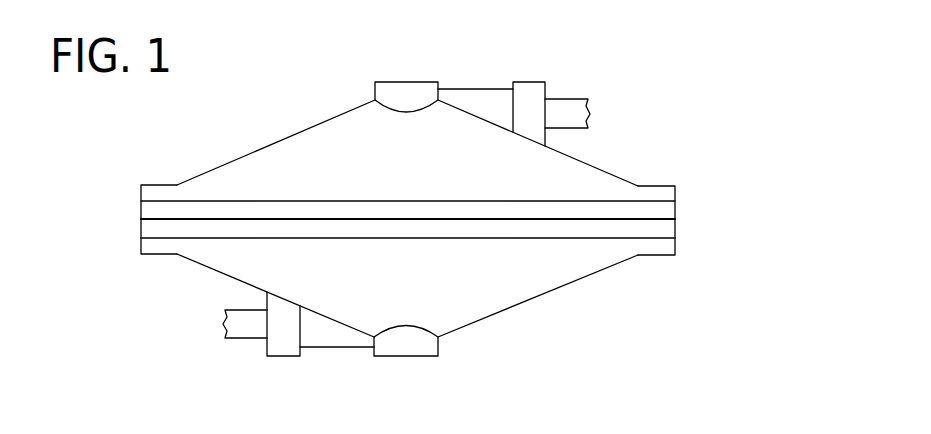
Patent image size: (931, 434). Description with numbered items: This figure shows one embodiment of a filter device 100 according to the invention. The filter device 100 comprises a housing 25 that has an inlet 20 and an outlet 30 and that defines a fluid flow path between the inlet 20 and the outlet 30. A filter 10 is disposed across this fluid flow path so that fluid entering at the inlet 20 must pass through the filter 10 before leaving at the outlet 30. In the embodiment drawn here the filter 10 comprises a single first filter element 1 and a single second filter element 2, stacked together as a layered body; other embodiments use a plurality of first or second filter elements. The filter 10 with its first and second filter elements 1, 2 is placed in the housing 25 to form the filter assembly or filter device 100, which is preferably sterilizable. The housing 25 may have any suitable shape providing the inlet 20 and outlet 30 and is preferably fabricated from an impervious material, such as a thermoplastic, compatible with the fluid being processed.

The filter device 100 is at (638, 97).
The inlet 20 is at (482, 103).
The outlet 30 is at (330, 336).
The housing 25 is at (118, 173).
The filter 10 is at (688, 199).
The first filter element 1 is at (633, 212).
The second filter element 2 is at (633, 231).